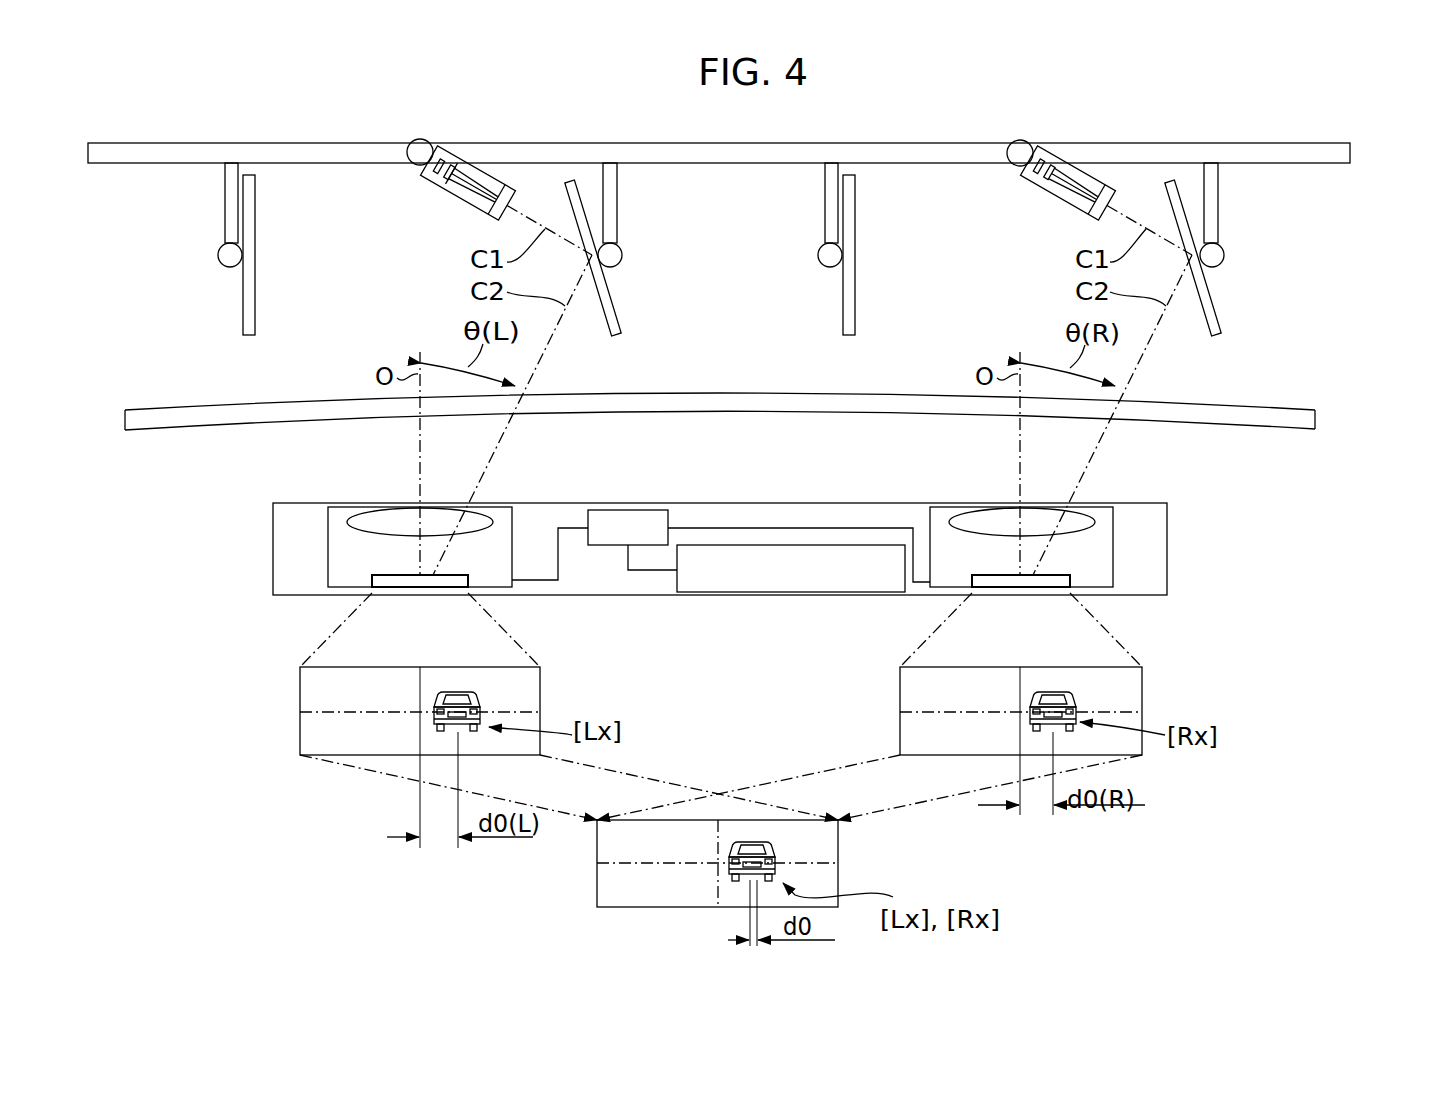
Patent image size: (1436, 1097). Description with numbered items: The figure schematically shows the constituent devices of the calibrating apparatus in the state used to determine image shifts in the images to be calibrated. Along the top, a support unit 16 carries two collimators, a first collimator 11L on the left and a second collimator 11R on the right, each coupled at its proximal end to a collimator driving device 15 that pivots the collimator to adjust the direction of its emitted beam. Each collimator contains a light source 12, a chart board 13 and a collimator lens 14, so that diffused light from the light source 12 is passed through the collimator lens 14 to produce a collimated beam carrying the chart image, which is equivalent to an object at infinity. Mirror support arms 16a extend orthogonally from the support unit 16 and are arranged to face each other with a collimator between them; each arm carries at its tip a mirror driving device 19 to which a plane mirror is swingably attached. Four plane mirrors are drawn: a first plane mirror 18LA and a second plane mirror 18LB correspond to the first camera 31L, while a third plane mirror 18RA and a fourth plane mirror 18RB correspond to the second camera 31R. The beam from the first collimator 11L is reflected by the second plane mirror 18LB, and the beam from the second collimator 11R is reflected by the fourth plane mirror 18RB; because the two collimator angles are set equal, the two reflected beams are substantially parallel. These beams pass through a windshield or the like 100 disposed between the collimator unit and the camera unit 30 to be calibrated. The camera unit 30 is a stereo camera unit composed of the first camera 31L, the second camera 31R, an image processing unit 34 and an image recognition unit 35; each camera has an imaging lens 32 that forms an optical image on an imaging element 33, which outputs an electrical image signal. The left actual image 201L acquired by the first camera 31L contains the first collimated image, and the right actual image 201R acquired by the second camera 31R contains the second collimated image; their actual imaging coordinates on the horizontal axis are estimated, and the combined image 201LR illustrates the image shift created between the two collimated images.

The first collimator 11L is at (416, 226).
The second collimator 11R is at (1046, 196).
The light source 12 is at (432, 176).
The chart board 13 is at (447, 192).
The collimator lens 14 is at (486, 222).
The collimator driving device 15 is at (412, 143).
The support unit 16 is at (725, 149).
The mirror support arm 16a is at (225, 194).
The first plane mirror 18LA is at (243, 318).
The second plane mirror 18LB is at (611, 312).
The third plane mirror 18RA is at (843, 314).
The fourth plane mirror 18RB is at (1218, 322).
The mirror driving device 19 is at (226, 261).
The camera unit 30 is at (764, 512).
The first camera 31L is at (605, 468).
The second camera 31R is at (915, 468).
The imaging lens 32 is at (478, 510).
The imaging element 33 is at (470, 574).
The image processing unit 34 is at (650, 508).
The image recognition unit 35 is at (740, 544).
The windshield or the like 100 is at (1318, 418).
The left actual image 201L is at (541, 682).
The right actual image 201R is at (900, 670).
The combined image 201LR is at (839, 864).